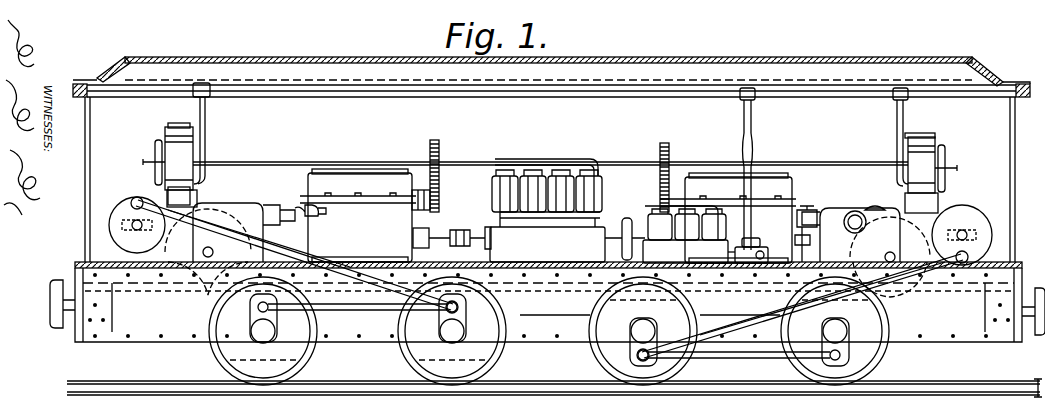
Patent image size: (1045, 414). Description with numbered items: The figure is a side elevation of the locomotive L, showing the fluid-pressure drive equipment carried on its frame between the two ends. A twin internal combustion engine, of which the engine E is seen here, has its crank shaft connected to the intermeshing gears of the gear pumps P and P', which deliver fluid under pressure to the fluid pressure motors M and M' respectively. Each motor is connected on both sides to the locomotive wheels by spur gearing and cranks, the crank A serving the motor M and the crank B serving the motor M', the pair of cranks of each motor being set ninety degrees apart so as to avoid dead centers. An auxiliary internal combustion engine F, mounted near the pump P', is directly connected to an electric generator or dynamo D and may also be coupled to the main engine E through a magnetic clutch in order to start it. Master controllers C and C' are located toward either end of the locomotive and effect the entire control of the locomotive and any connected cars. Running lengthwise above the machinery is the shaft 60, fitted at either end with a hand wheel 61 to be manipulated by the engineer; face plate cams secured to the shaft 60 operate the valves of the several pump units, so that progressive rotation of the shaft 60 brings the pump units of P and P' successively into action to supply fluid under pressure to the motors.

The crank A is at (320, 260).
The crank B is at (743, 328).
The master controller C is at (172, 156).
The master controller C' is at (931, 162).
The electric generator or dynamo D is at (757, 250).
The internal combustion engine E is at (556, 187).
The auxiliary internal combustion engine F is at (722, 228).
The locomotive L is at (658, 127).
The fluid pressure motor M is at (283, 245).
The fluid pressure motor M' is at (814, 268).
The gear pump P is at (395, 198).
The gear pump P' is at (728, 198).
The shaft 60 is at (460, 162).
The hand wheel 61 is at (155, 149).